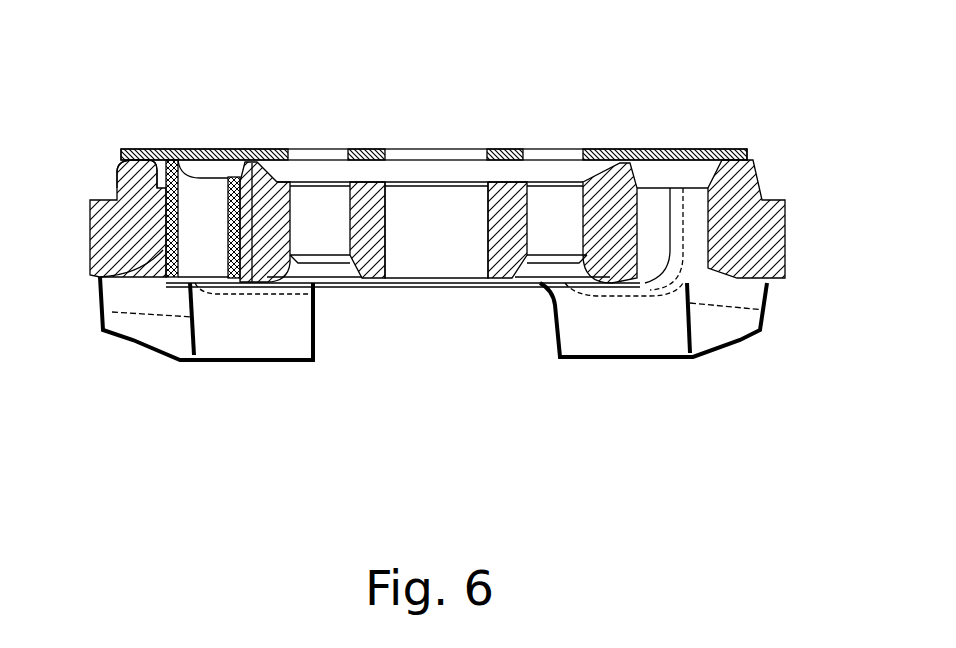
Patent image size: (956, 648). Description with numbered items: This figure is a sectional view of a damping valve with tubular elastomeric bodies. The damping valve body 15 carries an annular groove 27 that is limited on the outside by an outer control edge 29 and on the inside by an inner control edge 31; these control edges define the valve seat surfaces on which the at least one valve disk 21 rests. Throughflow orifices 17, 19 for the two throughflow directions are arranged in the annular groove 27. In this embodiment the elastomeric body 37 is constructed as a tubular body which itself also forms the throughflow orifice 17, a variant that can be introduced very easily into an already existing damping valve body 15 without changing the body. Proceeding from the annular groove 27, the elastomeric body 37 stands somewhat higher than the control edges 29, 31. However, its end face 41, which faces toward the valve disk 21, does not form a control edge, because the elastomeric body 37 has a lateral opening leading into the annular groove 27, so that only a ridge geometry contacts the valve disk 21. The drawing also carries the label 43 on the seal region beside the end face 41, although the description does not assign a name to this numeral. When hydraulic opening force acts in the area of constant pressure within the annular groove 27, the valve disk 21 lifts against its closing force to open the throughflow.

The damping valve body 15 is at (128, 218).
The throughflow orifice 17 is at (198, 252).
The throughflow orifice 19 is at (555, 228).
The valve disk 21 is at (661, 149).
The annular groove 27 is at (693, 175).
The outer control edge 29 is at (120, 183).
The inner control edge 31 is at (252, 248).
The elastomeric body 37 is at (100, 277).
The end face 41 is at (208, 150).
The seal 43 is at (230, 150).